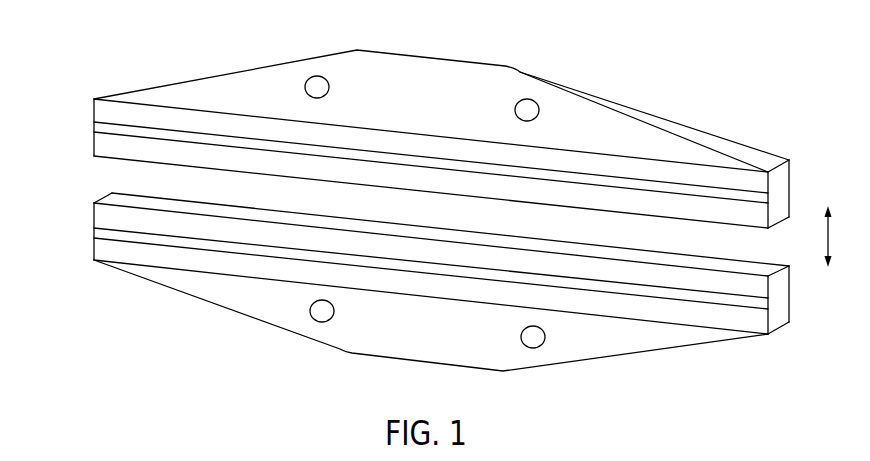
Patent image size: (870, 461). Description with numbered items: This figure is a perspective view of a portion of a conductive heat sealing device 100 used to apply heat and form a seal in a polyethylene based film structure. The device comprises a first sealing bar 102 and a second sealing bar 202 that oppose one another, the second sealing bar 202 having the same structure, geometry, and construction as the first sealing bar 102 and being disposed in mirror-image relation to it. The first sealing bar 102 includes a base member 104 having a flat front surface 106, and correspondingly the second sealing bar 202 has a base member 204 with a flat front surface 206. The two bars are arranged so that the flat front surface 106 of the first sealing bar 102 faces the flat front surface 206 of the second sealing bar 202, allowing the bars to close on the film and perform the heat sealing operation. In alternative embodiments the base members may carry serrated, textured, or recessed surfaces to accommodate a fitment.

The conductive heat sealing device 100 is at (675, 91).
The first sealing bar 102 is at (94, 217).
The base member 104 is at (245, 295).
The flat front surface 106 is at (726, 252).
The second sealing bar 202 is at (107, 129).
The base member 204 is at (247, 88).
The flat front surface 206 is at (106, 168).